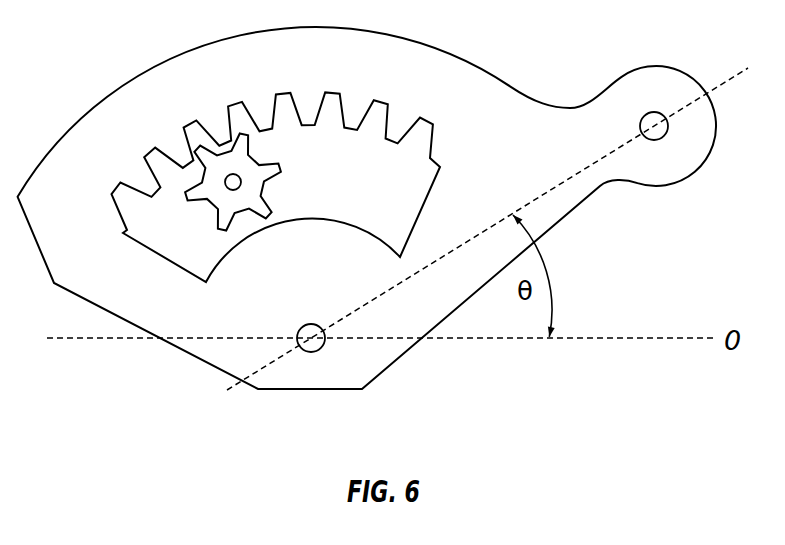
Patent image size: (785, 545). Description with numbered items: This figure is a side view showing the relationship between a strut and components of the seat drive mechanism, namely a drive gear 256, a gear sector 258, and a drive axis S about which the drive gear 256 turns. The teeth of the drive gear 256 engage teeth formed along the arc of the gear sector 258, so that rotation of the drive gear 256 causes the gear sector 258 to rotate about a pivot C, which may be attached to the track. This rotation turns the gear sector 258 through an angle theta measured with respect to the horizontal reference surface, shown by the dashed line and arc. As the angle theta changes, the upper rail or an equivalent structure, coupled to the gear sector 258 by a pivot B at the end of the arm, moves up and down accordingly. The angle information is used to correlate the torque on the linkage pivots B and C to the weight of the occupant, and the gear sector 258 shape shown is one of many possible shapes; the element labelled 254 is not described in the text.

The pinion gear 254 is at (238, 198).
The drive gear 256 is at (280, 166).
The gear sector 258 is at (498, 80).
The drive axis S is at (243, 183).
The pivot C is at (301, 325).
The pivot B is at (678, 133).